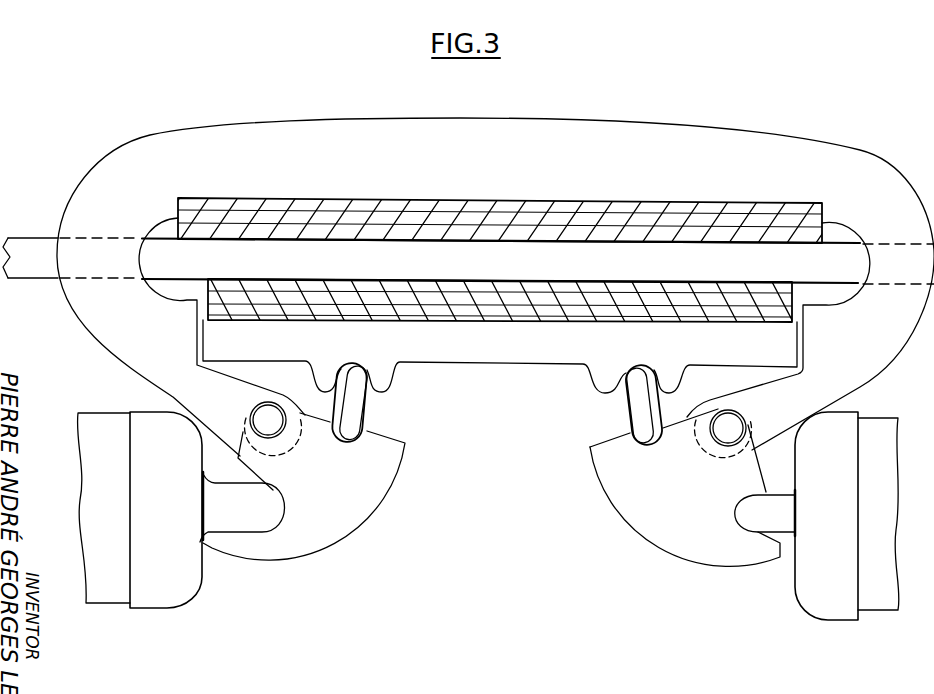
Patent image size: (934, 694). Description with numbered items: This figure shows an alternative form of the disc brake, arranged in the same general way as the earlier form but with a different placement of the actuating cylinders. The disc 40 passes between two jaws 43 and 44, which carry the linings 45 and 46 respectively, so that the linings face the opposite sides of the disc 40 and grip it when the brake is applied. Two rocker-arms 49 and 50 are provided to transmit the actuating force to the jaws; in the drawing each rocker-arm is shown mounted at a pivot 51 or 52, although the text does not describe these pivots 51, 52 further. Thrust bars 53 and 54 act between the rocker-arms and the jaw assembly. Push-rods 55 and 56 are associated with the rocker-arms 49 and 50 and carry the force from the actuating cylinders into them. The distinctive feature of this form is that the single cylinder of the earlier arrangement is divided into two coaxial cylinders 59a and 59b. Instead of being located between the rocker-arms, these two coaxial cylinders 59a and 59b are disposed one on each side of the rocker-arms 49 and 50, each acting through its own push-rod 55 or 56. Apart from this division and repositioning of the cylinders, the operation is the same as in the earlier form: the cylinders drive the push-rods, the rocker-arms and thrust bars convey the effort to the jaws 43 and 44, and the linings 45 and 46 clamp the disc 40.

The disc 40 is at (27, 250).
The jaw 43 is at (418, 115).
The jaw 44 is at (490, 348).
The lining 45 is at (510, 212).
The lining 46 is at (687, 322).
The rocker-arm 49 is at (362, 508).
The rocker-arm 50 is at (632, 513).
The left pivot pin 51 is at (250, 413).
The right pivot pin 52 is at (748, 417).
The thrust bar 53 is at (353, 406).
The thrust bar 54 is at (637, 402).
The push-rod 55 is at (232, 523).
The push-rod 56 is at (787, 521).
The coaxial cylinder 59a is at (112, 592).
The coaxial cylinder 59b is at (882, 598).